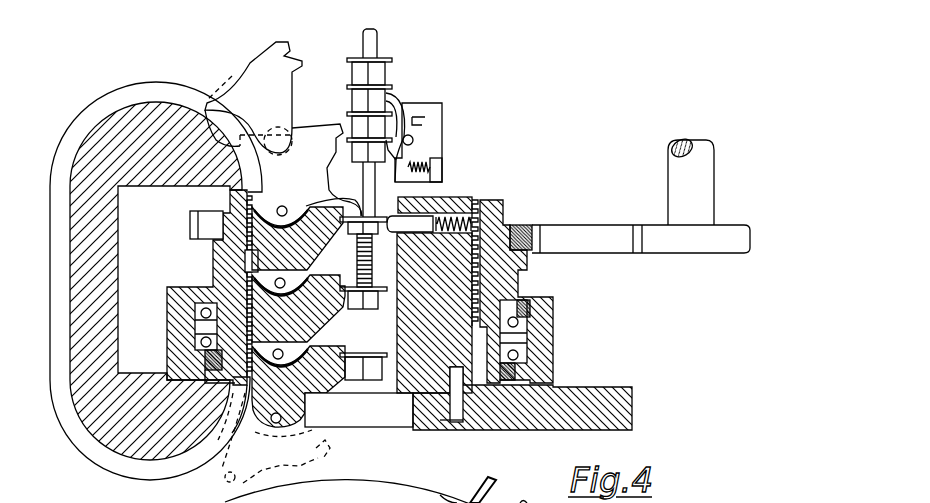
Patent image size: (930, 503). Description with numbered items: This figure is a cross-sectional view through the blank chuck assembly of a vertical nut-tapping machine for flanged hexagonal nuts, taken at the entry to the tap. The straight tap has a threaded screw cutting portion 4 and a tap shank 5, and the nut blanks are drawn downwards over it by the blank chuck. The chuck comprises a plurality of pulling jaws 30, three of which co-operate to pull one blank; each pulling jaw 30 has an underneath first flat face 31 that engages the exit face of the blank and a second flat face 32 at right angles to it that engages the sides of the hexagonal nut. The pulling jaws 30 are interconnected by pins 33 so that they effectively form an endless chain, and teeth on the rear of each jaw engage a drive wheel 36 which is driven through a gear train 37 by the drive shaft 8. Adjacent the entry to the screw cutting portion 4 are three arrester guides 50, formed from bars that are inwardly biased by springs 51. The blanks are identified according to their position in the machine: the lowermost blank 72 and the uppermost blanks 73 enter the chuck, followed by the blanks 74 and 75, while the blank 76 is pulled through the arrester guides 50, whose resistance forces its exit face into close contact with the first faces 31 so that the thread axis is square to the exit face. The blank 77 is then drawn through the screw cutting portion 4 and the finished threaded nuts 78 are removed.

The threaded screw cutting portion 4 is at (368, 280).
The tap shank 5 is at (378, 42).
The drive shaft 8 is at (680, 172).
The pulling jaw 30 is at (268, 62).
The first flat face 31 is at (318, 442).
The second flat face 32 is at (300, 55).
The pin 33 is at (284, 206).
The drive wheel 36 is at (500, 283).
The gear train 37 is at (553, 237).
The arrester guide 50 is at (413, 222).
The spring 51 is at (468, 204).
The lowermost blank 72 is at (384, 151).
The uppermost blank 73 is at (392, 128).
The blank 74 is at (400, 112).
The blank 75 is at (388, 72).
The blank 76 is at (352, 241).
The blank 77 is at (358, 304).
The threaded nut 78 is at (363, 386).